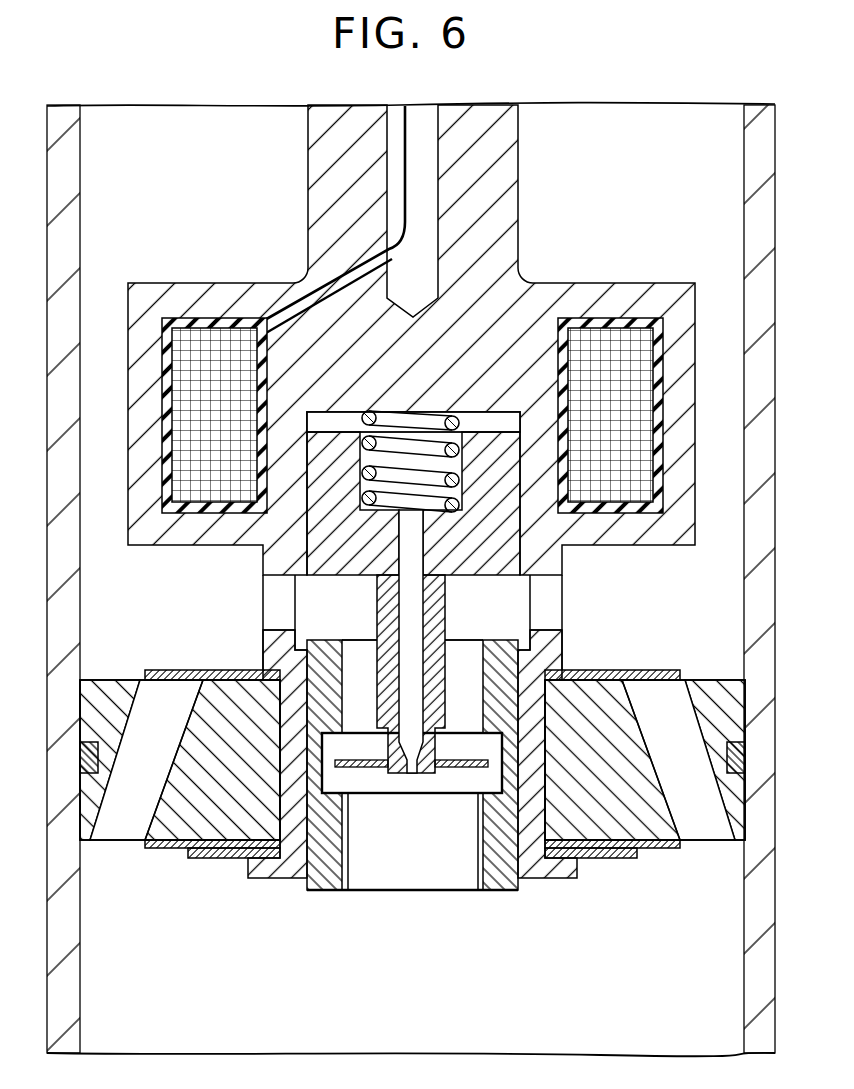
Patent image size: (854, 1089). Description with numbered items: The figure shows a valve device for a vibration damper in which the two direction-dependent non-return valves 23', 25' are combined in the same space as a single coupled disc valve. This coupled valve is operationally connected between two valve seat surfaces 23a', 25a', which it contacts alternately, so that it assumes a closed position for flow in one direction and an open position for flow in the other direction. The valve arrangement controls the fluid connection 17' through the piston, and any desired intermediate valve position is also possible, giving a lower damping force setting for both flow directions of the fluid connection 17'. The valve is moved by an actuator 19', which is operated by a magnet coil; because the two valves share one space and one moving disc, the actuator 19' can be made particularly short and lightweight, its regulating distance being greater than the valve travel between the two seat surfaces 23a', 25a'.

The fluid connection 17' is at (413, 872).
The actuator 19' is at (491, 641).
The valve 23' is at (290, 669).
The valve seat surface 23a' is at (555, 677).
The valve 25' is at (339, 796).
The valve seat surface 25a' is at (494, 796).